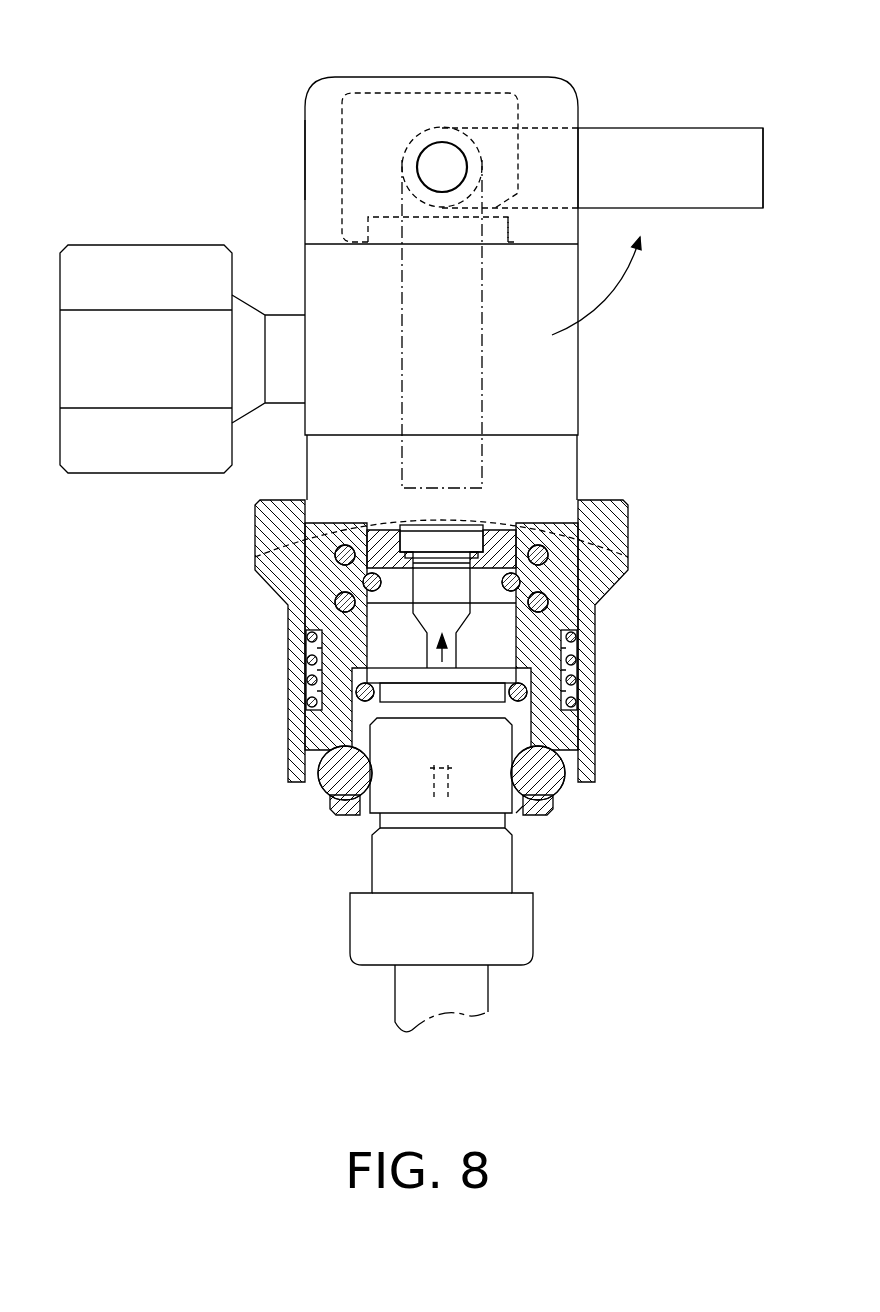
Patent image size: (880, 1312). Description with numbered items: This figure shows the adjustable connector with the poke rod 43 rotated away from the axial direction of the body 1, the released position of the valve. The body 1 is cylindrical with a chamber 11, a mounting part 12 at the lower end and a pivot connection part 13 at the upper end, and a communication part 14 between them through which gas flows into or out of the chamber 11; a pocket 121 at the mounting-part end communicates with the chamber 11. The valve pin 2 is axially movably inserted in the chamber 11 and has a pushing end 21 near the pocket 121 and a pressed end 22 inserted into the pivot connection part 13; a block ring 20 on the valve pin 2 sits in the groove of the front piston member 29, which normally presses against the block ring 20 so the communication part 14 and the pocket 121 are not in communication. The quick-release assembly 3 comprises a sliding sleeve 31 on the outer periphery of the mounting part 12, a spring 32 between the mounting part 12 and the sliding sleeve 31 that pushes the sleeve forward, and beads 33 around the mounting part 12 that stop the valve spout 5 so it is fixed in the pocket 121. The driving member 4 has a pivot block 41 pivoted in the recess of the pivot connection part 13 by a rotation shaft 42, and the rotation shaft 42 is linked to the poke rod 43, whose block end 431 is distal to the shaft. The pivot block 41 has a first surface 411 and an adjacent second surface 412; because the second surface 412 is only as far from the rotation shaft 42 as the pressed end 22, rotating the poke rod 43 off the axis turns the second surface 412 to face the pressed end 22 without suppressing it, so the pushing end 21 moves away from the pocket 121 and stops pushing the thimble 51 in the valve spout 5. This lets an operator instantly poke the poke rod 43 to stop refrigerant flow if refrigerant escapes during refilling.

The body 1 is at (572, 373).
The valve pin 2 is at (420, 602).
The quick-release assembly 3 is at (409, 641).
The driving member 4 is at (578, 155).
The valve spout 5 is at (493, 875).
The chamber 11 is at (576, 660).
The mounting part 12 is at (560, 712).
The pivot connection part 13 is at (305, 150).
The communication part 14 is at (97, 455).
The block ring 20 is at (387, 523).
The pushing end 21 is at (445, 700).
The pressed end 22 is at (513, 223).
The front piston member 29 is at (490, 533).
The sliding sleeve 31 is at (297, 718).
The spring 32 is at (332, 553).
The beads 33 is at (290, 772).
The pivot block 41 is at (493, 92).
The rotation shaft 42 is at (442, 167).
The poke rod 43 is at (685, 128).
The thimble 51 is at (426, 772).
The pocket 121 is at (519, 815).
The first surface 411 is at (518, 143).
The second surface 412 is at (436, 222).
The block end 431 is at (763, 170).